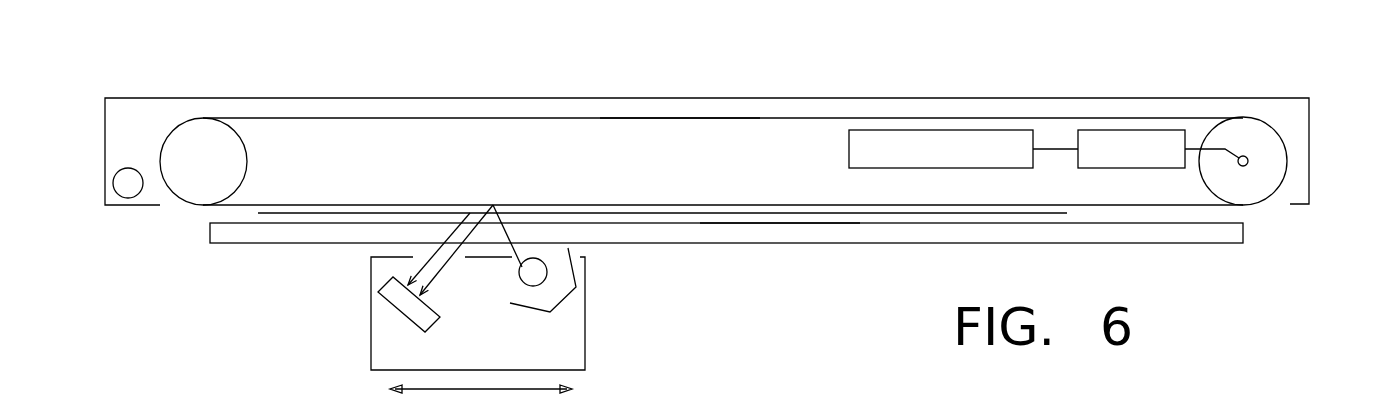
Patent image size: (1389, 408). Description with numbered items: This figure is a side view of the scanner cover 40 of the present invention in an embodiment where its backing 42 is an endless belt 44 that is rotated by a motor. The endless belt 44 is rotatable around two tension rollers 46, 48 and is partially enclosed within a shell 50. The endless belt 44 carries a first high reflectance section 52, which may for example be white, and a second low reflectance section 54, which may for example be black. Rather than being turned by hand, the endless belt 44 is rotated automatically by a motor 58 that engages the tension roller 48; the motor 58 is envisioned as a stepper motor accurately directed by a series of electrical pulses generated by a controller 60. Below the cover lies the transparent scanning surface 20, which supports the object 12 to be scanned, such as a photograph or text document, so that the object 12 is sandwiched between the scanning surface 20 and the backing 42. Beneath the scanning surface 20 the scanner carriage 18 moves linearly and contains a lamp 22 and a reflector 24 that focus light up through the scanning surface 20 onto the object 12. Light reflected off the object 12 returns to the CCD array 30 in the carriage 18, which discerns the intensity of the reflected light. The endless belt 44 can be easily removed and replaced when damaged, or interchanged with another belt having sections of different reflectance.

The object 12 is at (777, 217).
The scanner carriage 18 is at (371, 343).
The transparent scanning surface 20 is at (893, 233).
The lamp 22 is at (519, 276).
The reflector 24 is at (562, 307).
The CCD array 30 is at (433, 323).
The cover 40 is at (111, 87).
The backing 42 is at (183, 214).
The endless belt 44 is at (390, 118).
The tension roller 46 is at (246, 167).
The tension roller 48 is at (1262, 193).
The shell 50 is at (1305, 126).
The first high reflectance section 52 is at (722, 211).
The second low reflectance section 54 is at (675, 118).
The motor 58 is at (1125, 168).
The controller 60 is at (938, 166).